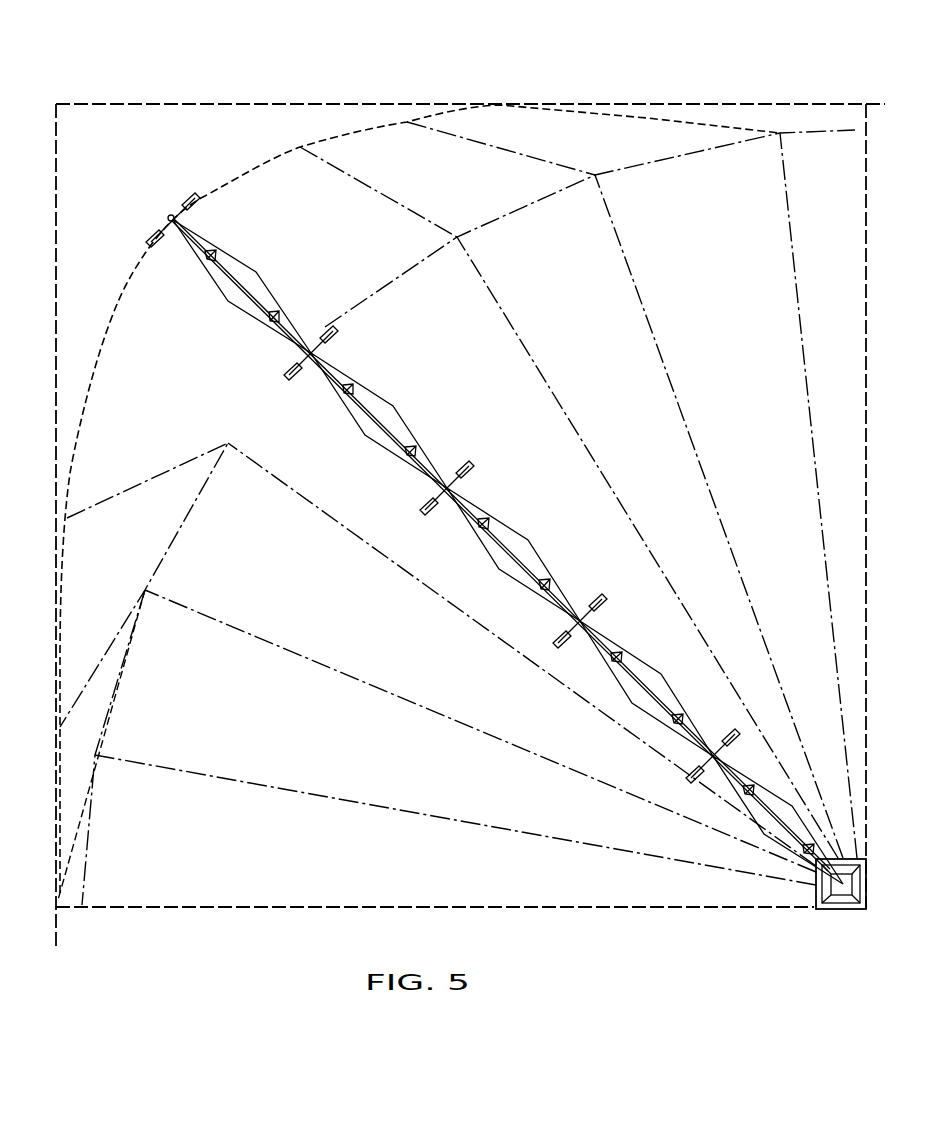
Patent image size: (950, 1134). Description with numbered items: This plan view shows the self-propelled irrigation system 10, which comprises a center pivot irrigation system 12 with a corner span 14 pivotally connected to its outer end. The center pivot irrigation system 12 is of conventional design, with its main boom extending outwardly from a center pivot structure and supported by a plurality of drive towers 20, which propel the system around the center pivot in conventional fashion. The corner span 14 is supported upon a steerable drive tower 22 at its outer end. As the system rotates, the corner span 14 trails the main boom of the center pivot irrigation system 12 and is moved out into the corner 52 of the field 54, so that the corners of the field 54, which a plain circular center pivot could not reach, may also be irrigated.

The self-propelled irrigation system 10 is at (485, 577).
The center pivot irrigation system 12 is at (552, 390).
The corner span 14 is at (343, 178).
The drive towers 20 is at (421, 489).
The steerable drive tower 22 is at (172, 262).
The corner 52 is at (172, 153).
The field 54 is at (56, 170).